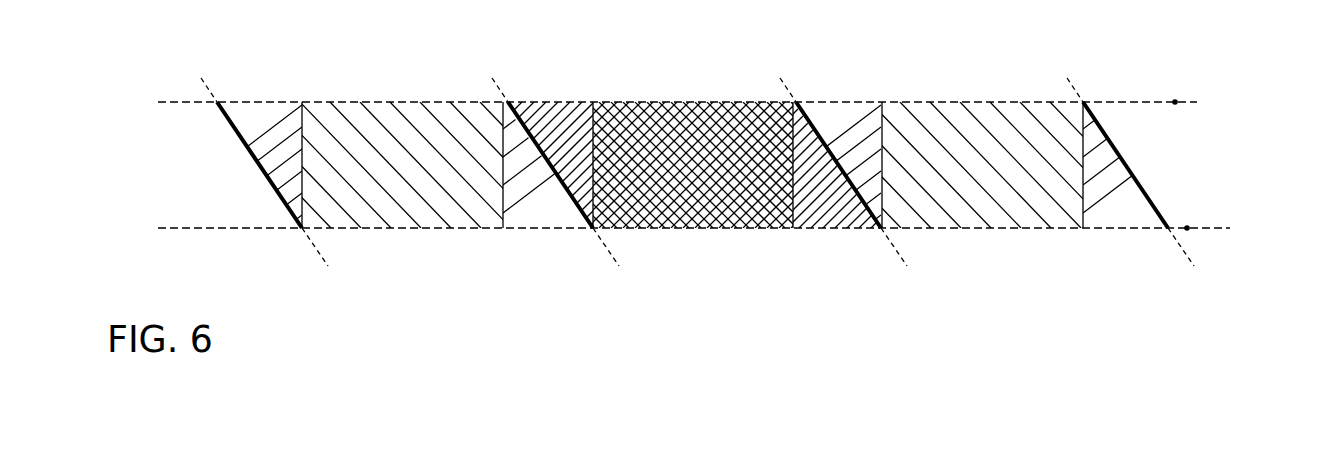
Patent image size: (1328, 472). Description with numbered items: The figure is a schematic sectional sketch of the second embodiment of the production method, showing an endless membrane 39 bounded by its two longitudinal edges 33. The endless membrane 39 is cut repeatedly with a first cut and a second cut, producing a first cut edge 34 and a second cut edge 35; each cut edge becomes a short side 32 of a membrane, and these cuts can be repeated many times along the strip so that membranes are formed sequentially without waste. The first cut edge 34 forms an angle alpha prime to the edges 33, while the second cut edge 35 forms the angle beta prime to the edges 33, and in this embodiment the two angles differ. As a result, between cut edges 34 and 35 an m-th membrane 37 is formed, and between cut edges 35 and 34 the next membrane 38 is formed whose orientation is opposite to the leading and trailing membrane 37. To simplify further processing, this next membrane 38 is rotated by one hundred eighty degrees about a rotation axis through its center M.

The short side 32 is at (232, 113).
The edges of the endless membrane 33 is at (1175, 102).
The first cut edge 34 is at (616, 263).
The second cut edge 35 is at (905, 263).
The m-th membrane 37 is at (377, 115).
The m+1-th membrane 38 is at (648, 115).
The endless membrane 39 is at (1234, 97).
The center of the membrane M is at (748, 175).